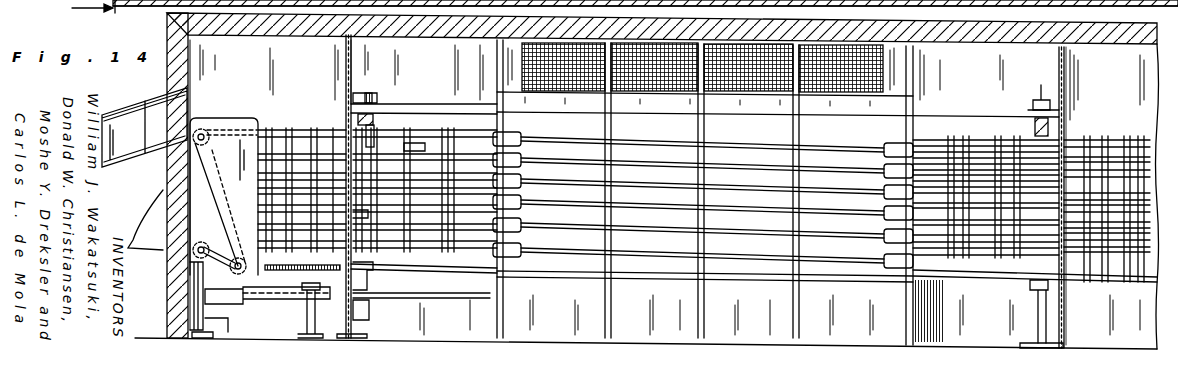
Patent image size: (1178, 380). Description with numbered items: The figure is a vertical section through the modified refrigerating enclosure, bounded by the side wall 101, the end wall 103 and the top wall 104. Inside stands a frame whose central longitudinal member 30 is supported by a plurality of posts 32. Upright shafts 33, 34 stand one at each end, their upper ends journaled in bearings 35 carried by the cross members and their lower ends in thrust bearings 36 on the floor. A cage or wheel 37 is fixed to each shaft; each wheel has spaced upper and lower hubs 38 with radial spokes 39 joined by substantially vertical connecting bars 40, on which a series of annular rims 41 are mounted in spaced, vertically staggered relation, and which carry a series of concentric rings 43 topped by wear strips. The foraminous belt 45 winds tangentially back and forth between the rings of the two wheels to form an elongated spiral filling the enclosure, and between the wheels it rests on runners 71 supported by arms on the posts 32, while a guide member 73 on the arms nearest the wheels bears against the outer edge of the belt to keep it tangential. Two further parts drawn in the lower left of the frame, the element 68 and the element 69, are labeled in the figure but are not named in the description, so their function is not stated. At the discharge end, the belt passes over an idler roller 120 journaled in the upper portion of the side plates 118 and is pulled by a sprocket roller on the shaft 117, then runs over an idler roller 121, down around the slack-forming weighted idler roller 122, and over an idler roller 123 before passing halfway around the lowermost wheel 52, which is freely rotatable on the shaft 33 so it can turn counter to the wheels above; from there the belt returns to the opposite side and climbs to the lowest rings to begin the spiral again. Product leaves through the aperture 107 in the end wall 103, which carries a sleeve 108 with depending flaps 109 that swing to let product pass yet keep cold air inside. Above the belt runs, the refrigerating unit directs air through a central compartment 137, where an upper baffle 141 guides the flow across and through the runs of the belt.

The central longitudinal member 30 is at (441, 104).
The posts 32 is at (507, 124).
The upright shaft 33 is at (375, 147).
The upright shaft 34 is at (1033, 127).
The bearings 35 is at (383, 82).
The thrust bearings 36 is at (369, 334).
The cage or wheel 37 is at (308, 133).
The hubs 38 is at (371, 215).
The radial spokes 39 is at (414, 145).
The connecting bars 40 is at (437, 147).
The annular rims 41 is at (328, 150).
The concentric rings 43 is at (268, 207).
The belt 45 is at (458, 291).
The wheel 52 is at (440, 303).
The bar 68 is at (304, 270).
The bracket 69 is at (375, 274).
The runners 71 is at (767, 152).
The guide member 73 is at (526, 147).
The side wall 101 is at (1125, 97).
The end wall 103 is at (187, 71).
The top wall 104 is at (608, 35).
The aperture 107 is at (181, 84).
The sleeve 108 is at (143, 100).
The baffles or flaps 109 is at (128, 151).
The shaft 117 is at (236, 272).
The side plates 118 is at (242, 175).
The idler roller 120 is at (205, 133).
The idler roller 121 is at (231, 204).
The slack-forming weighted idler roller 122 is at (212, 316).
The idler roller 123 is at (250, 306).
The central area or compartment 137 is at (668, 138).
The upper baffle 141 is at (345, 63).